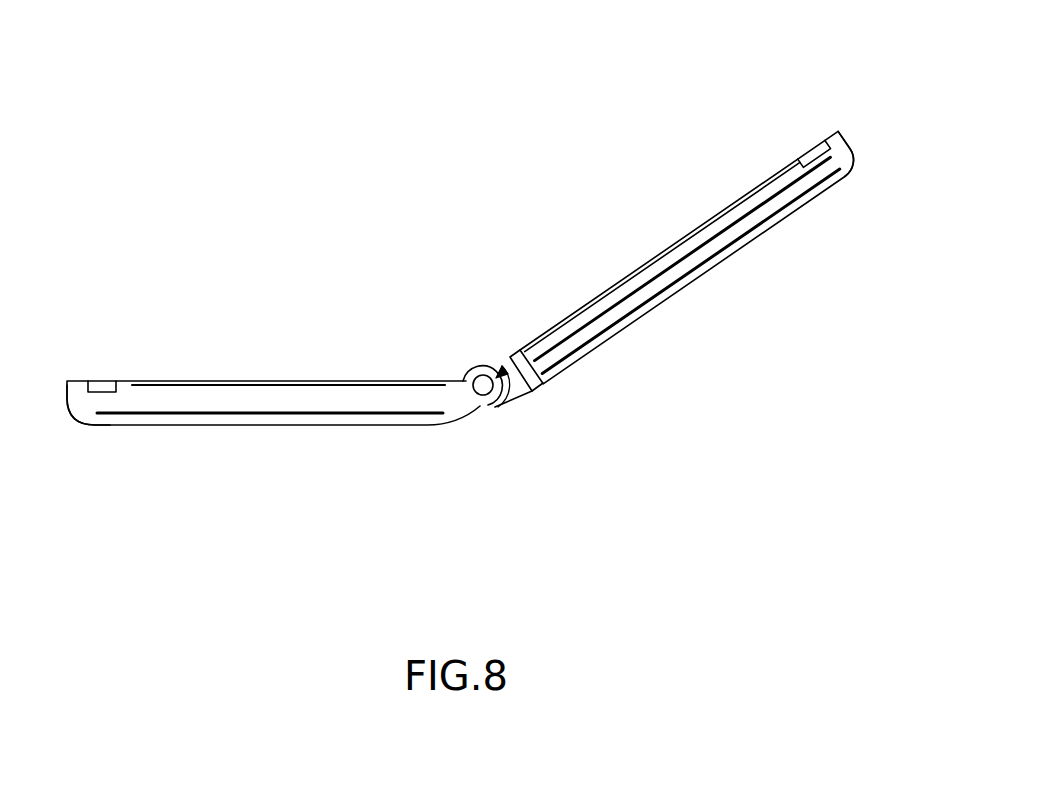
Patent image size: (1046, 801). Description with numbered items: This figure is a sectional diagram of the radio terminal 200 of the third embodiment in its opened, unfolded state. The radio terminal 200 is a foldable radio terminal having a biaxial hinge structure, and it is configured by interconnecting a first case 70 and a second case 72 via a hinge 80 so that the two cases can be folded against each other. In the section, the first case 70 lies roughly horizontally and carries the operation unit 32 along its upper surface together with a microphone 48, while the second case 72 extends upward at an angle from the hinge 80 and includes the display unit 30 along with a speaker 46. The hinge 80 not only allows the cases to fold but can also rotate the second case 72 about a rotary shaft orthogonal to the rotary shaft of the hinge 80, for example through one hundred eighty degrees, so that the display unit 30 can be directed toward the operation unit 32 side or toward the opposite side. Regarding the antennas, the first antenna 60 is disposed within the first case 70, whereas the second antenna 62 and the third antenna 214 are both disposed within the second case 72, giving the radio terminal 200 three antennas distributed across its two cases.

The radio terminal 200 is at (653, 69).
The display unit 30 is at (658, 254).
The operation unit 32 is at (217, 385).
The speaker 46 is at (813, 147).
The microphone 48 is at (103, 387).
The first antenna 60 is at (328, 415).
The second antenna 62 is at (760, 228).
The first case 70 is at (80, 403).
The second case 72 is at (845, 153).
The hinge 80 is at (482, 390).
The third antenna 214 is at (797, 163).